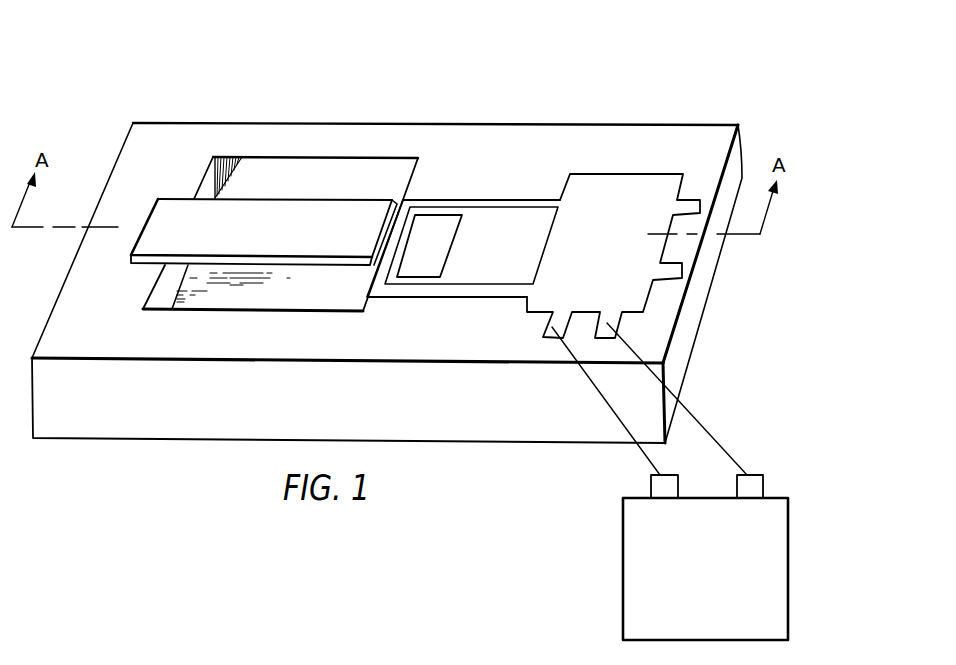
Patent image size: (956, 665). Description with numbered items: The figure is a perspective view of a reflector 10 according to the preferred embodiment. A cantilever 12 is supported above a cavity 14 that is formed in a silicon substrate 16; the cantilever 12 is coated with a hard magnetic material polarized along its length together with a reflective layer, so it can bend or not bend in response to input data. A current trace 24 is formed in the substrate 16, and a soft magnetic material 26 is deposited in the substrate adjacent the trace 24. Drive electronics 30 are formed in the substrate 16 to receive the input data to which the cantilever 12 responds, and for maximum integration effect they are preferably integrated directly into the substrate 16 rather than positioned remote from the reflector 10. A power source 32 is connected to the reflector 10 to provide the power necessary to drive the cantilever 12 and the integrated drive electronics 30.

The reflector 10 is at (170, 50).
The cantilever 12 is at (181, 211).
The cavity 14 is at (201, 297).
The silicon substrate 16 is at (467, 142).
The current trace 24 is at (443, 288).
The soft magnetic material 26 is at (443, 225).
The drive electronics 30 is at (637, 292).
The power source 32 is at (623, 527).